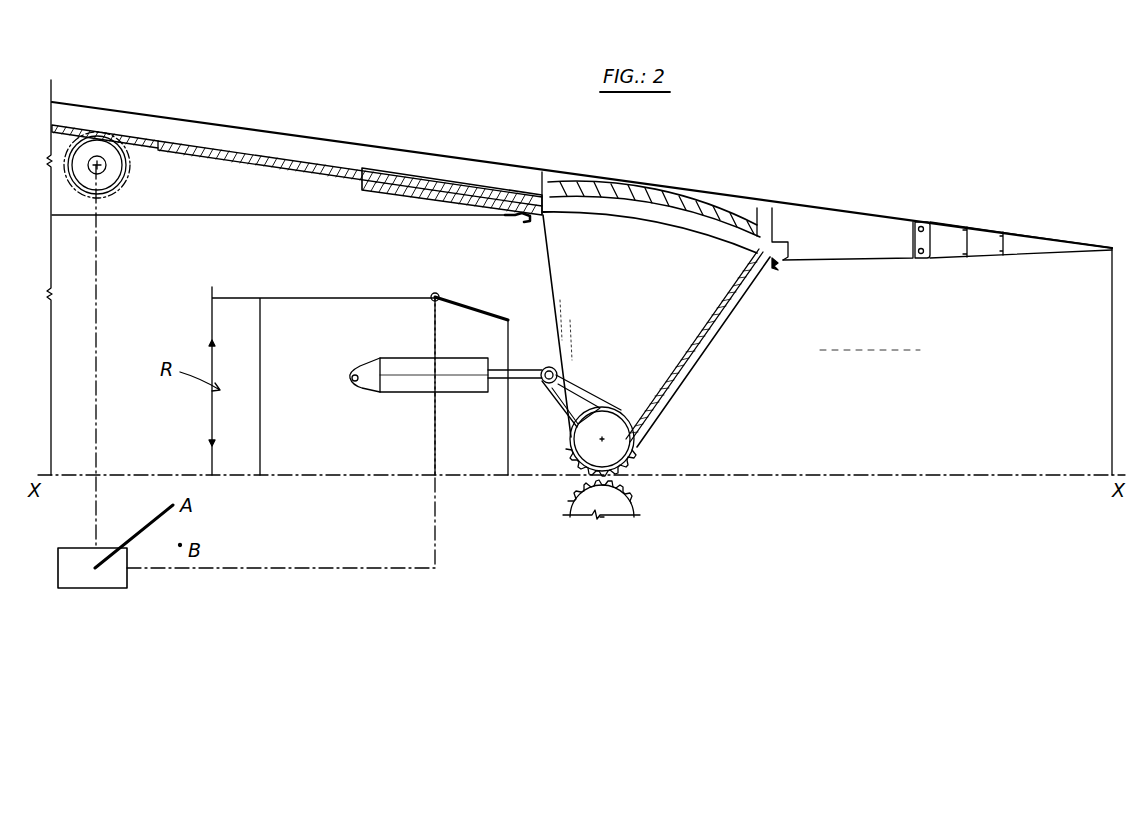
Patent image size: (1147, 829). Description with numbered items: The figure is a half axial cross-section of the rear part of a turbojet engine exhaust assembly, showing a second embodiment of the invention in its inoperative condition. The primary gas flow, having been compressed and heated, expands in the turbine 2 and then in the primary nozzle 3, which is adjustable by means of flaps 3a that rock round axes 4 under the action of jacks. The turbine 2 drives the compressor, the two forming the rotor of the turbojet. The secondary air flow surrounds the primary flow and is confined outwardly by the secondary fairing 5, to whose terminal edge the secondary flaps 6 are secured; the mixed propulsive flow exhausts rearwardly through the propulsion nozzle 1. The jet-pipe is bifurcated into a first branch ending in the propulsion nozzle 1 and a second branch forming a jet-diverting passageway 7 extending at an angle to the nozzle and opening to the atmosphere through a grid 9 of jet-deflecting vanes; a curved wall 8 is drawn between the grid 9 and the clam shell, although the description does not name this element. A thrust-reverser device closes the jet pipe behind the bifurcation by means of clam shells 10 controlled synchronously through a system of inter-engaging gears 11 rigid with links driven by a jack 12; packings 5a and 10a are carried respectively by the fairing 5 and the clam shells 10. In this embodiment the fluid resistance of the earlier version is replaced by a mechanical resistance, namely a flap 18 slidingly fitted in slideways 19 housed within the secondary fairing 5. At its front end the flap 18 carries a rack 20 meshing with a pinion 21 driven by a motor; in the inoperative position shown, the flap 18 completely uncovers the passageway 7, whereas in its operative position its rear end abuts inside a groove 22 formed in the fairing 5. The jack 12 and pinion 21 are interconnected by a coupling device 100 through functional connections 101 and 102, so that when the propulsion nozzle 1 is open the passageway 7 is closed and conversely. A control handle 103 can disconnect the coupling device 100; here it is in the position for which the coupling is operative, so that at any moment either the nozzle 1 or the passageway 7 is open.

The propulsion nozzle 1 is at (996, 383).
The turbine 2 is at (240, 457).
The primary nozzle 3 is at (480, 452).
The flaps 3a is at (478, 300).
The axes 4 is at (436, 292).
The secondary fairing 5 is at (278, 140).
The packing 5a is at (522, 222).
The secondary flaps 6 is at (990, 240).
The jet-diverting passageway 7 is at (767, 210).
The curved member 8 is at (722, 230).
The grid 9 is at (640, 190).
The clam shell 10 is at (662, 307).
The packing 10a is at (776, 268).
The inter engaging gears 11 is at (625, 500).
The jack 12 is at (400, 380).
The flap 18 is at (340, 170).
The slideways 19 is at (430, 185).
The rack 20 is at (150, 135).
The pinion 21 is at (105, 178).
The groove 22 is at (792, 240).
The coupling device 100 is at (108, 584).
The functional connection 101 is at (265, 572).
The functional connection 102 is at (97, 415).
The control handle 103 is at (137, 532).